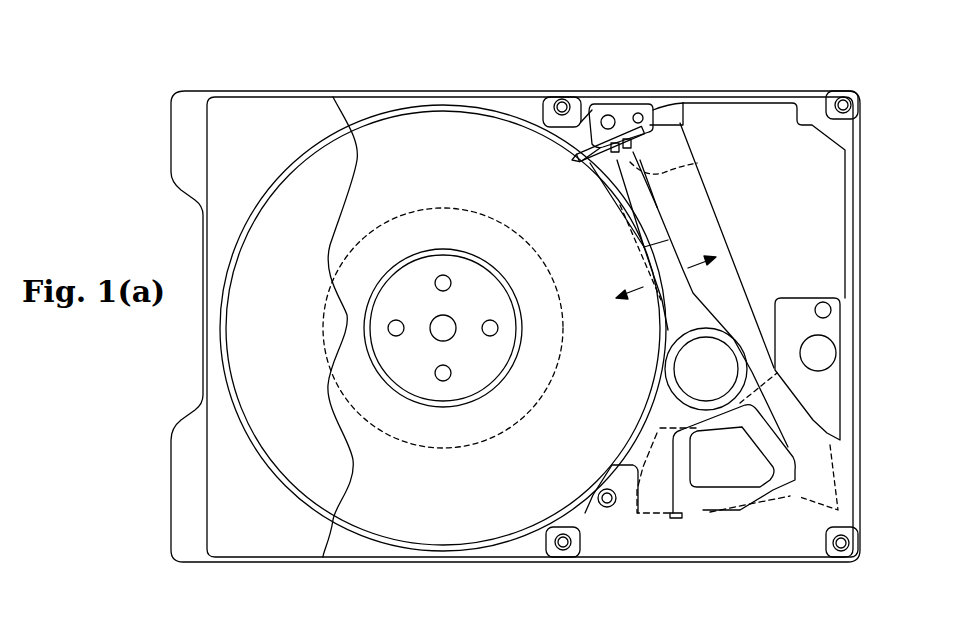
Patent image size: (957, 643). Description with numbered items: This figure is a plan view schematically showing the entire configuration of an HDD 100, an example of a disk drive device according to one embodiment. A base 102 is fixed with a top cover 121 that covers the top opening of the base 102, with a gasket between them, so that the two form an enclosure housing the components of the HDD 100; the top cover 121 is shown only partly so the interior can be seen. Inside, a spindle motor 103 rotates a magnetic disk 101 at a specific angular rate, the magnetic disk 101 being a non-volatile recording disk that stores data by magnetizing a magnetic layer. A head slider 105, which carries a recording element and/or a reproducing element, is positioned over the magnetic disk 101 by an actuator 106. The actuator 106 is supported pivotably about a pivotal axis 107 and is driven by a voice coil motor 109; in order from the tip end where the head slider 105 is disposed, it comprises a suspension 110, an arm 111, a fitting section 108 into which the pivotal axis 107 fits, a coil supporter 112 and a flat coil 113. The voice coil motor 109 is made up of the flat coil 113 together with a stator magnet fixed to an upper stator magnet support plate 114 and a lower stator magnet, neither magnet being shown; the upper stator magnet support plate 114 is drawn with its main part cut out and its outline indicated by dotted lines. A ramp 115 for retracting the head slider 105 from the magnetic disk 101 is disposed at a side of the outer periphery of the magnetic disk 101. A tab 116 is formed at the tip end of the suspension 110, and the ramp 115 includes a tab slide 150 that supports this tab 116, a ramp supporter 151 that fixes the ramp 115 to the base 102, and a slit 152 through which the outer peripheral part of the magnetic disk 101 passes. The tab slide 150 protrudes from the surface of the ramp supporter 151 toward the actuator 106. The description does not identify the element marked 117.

The hard disk drive 100 is at (846, 36).
The magnetic disk 101 is at (413, 530).
The base 102 is at (192, 555).
The spindle motor 103 is at (468, 418).
The head slider 105 is at (696, 164).
The actuator 106 is at (755, 349).
The pivotal axis 107 is at (688, 373).
The fitting section 108 is at (758, 305).
The voice coil motor 109 is at (712, 523).
The suspension 110 is at (645, 197).
The arm 111 is at (693, 294).
The coil supporter 112 is at (640, 408).
The flat coil 113 is at (748, 488).
The upper stator magnet support plate 114 is at (620, 484).
The ramp 115 is at (628, 103).
The tab 116 is at (611, 165).
The ramp 117 is at (661, 103).
The top cover 121 is at (255, 110).
The tab slide 150 is at (576, 166).
The ramp supporter 151 is at (596, 104).
The slit 152 is at (598, 151).